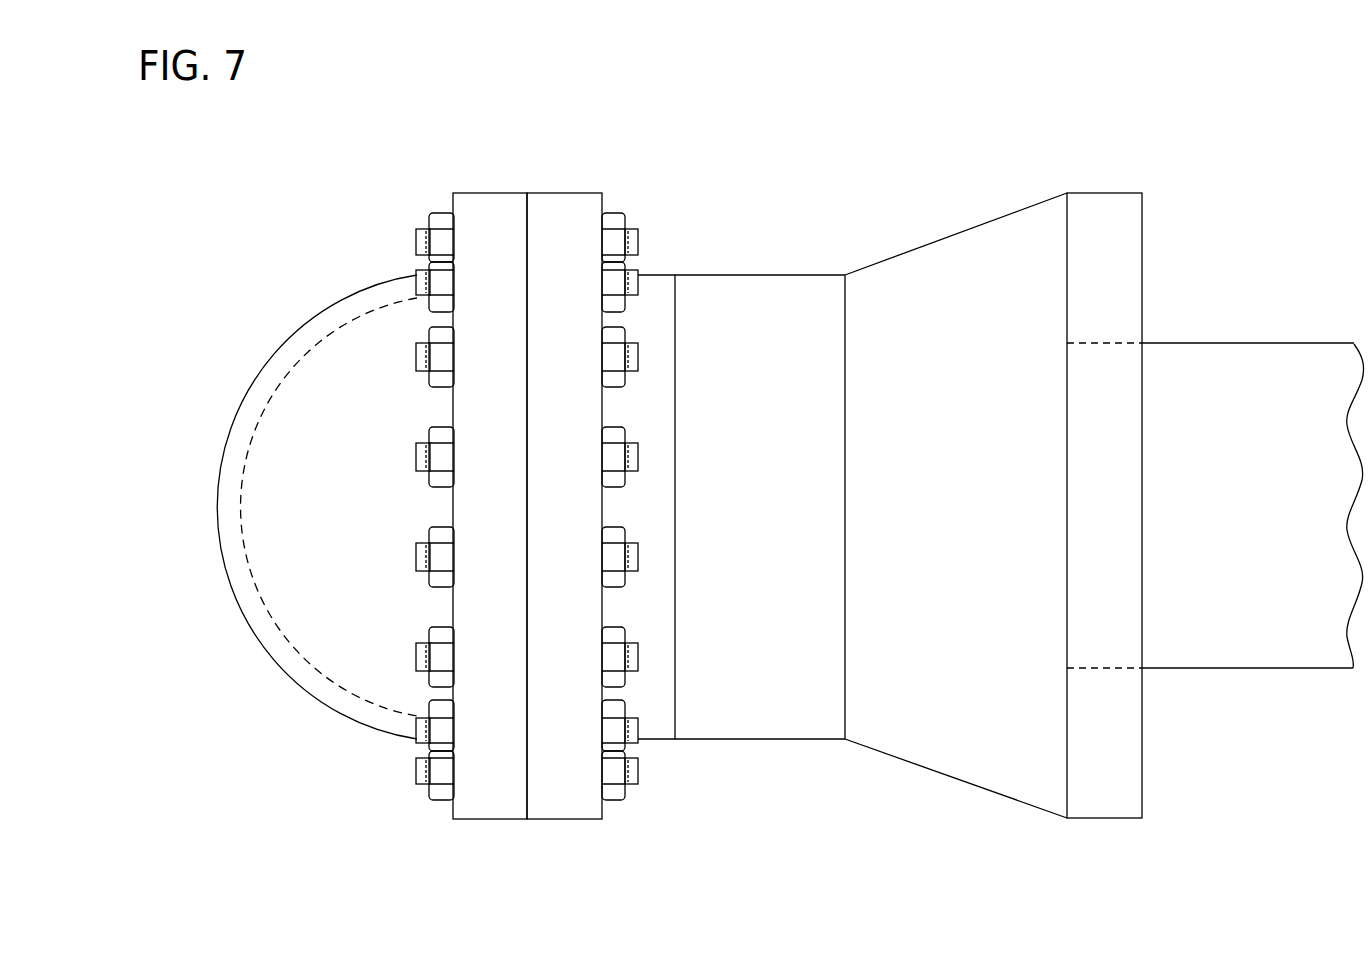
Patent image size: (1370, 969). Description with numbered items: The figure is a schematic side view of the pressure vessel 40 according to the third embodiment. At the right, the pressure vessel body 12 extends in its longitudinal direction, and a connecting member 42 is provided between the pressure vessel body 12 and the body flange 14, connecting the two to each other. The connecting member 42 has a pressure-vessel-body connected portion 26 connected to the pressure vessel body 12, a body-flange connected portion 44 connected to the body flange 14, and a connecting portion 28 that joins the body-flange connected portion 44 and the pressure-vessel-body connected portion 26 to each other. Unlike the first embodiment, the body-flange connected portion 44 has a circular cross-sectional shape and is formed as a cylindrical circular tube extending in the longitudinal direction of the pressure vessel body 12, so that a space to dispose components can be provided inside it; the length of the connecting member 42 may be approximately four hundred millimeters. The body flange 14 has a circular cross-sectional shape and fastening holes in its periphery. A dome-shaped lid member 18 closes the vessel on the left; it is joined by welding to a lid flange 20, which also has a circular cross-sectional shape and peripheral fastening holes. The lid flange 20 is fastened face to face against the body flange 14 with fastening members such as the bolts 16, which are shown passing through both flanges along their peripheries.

The pressure vessel body 12 is at (1262, 343).
The body flange 14 is at (565, 192).
The bolts 16 is at (418, 230).
The lid member 18 is at (270, 655).
The lid flange 20 is at (495, 192).
The pressure-vessel-body connected portion 26 is at (1111, 795).
The connecting portion 28 is at (975, 762).
The pressure vessel 40 is at (287, 237).
The connecting member 42 is at (1013, 206).
The body-flange connected portion 44 is at (762, 720).